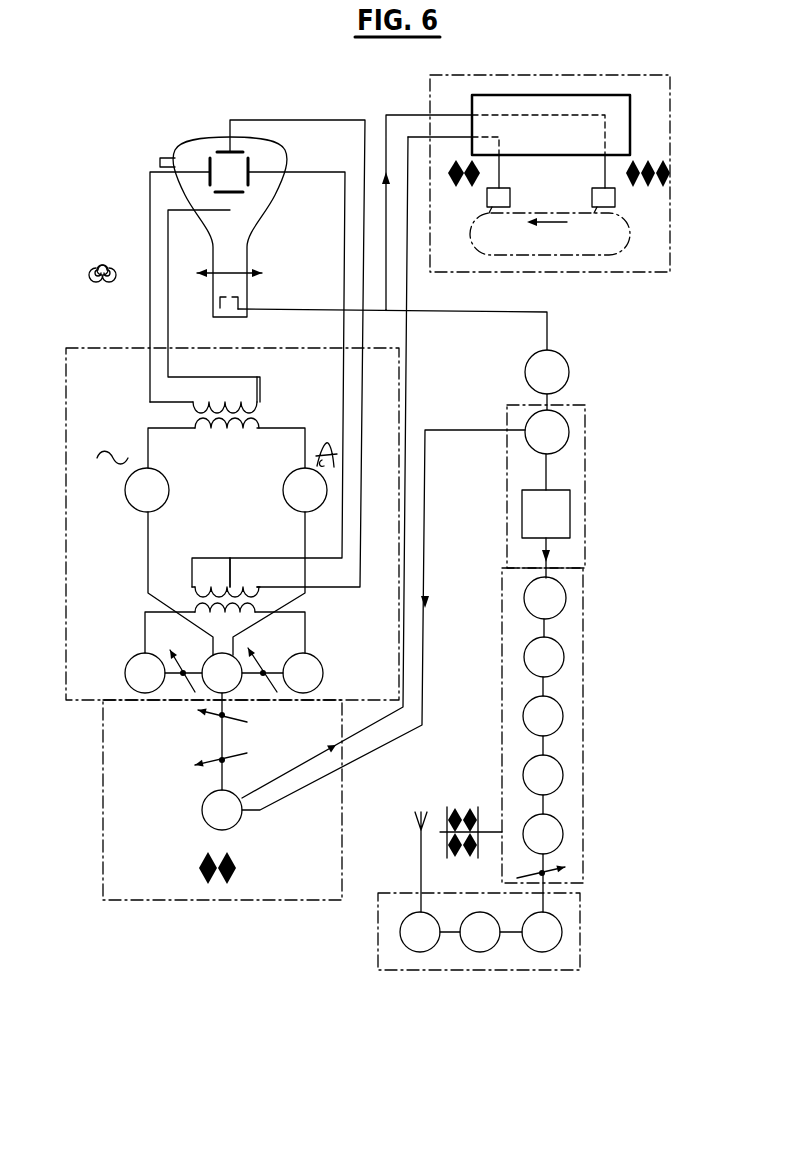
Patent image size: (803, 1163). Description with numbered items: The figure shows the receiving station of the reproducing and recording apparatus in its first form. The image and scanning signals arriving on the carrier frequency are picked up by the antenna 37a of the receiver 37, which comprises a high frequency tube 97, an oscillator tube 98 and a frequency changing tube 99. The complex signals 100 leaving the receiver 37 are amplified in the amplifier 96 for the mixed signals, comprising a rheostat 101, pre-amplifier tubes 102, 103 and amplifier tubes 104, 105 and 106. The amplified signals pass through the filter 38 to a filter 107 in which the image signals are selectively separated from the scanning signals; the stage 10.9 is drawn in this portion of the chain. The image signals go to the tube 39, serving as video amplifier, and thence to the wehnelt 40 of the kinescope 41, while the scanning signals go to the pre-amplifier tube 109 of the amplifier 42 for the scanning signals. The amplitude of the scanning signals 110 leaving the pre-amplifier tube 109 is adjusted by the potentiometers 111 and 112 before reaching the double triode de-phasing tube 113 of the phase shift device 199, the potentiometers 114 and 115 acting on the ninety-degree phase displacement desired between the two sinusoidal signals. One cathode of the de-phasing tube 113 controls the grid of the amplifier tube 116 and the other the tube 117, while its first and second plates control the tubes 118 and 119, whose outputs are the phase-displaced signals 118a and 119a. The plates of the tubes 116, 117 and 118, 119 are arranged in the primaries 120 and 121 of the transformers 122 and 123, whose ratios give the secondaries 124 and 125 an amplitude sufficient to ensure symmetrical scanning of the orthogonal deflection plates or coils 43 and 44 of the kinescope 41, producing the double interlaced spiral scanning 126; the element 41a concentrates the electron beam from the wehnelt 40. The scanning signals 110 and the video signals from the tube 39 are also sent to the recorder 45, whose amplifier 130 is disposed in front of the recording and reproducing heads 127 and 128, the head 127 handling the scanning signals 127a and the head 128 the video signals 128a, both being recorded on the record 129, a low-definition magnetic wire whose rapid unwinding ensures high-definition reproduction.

The kinescope 41 is at (238, 143).
The deflection plates or coils 43 is at (248, 170).
The deflection plates or coils 44 is at (245, 193).
The concentrating element 41a is at (232, 272).
The wehnelt 40 is at (238, 303).
The double interlaced spiral scanning 126 is at (103, 266).
The phase shift device 199 is at (115, 370).
The secondary 125 is at (242, 400).
The transformer 123 is at (251, 418).
The primary 121 is at (225, 436).
The phase-displaced signal 118a is at (98, 452).
The phase-displaced signal 119a is at (336, 449).
The amplifier tube 118 is at (142, 497).
The amplifier tube 119 is at (317, 490).
The secondary 124 is at (229, 578).
The transformer 122 is at (207, 591).
The primary 120 is at (260, 618).
The amplifier tube 116 is at (142, 667).
The potentiometer 115 is at (263, 672).
The amplifier tube 117 is at (323, 668).
The potentiometer 114 is at (182, 677).
The double triode de-phasing tube 113 is at (232, 682).
The potentiometer 112 is at (222, 716).
The potentiometer 111 is at (220, 762).
The amplifier for the scanning signals 42 is at (127, 838).
The scanning signals 110 is at (203, 877).
The pre-amplifier tube 109 is at (227, 820).
The amplifier 130 is at (607, 102).
The scanning signals 127a is at (465, 183).
The recording and reproducing head 127 is at (510, 197).
The video signals 128a is at (668, 168).
The recording and reproducing head 128 is at (615, 197).
The record 129 is at (623, 237).
The recorder 45 is at (637, 265).
The video amplifier 39 is at (557, 363).
The input unit 10.9 is at (563, 432).
The filter 38 is at (578, 470).
The filter 107 is at (560, 513).
The amplifier tube 106 is at (558, 600).
The amplifier tube 105 is at (555, 658).
The amplifier tube 104 is at (557, 717).
The pre-amplifier tube 103 is at (557, 775).
The amplifier 96 is at (570, 807).
The pre-amplifier tube 102 is at (553, 838).
The rheostat 101 is at (550, 876).
The antenna 37a is at (418, 826).
The complex signals 100 is at (462, 812).
The receiver 37 is at (582, 937).
The high frequency tube 97 is at (422, 945).
The oscillator tube 98 is at (480, 940).
The frequency changing tube 99 is at (542, 940).